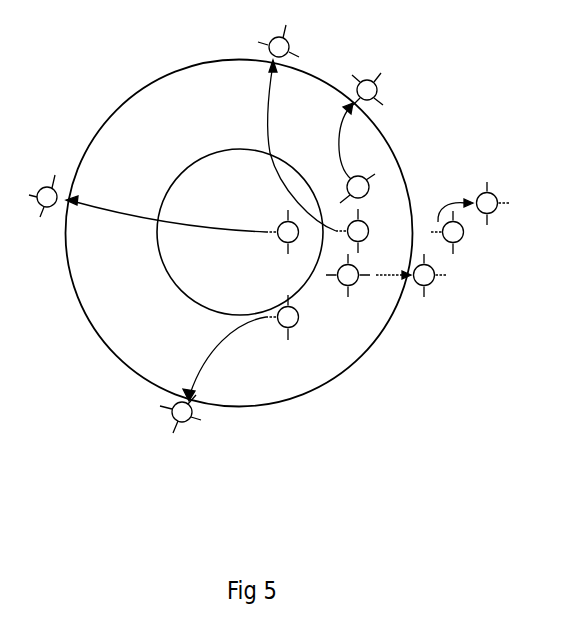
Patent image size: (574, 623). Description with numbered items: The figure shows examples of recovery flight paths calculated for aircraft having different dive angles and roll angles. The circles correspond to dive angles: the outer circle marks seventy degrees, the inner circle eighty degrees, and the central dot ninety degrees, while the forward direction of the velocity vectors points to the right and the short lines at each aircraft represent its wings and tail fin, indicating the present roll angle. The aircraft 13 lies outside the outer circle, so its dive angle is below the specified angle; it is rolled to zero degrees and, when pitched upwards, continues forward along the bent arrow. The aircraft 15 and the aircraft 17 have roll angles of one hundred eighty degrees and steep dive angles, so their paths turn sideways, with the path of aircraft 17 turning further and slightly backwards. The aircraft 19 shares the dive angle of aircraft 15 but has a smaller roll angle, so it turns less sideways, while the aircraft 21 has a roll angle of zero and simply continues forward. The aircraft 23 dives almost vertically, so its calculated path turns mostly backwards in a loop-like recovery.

The aircraft 13 is at (462, 238).
The aircraft 15 is at (368, 225).
The aircraft 17 is at (280, 329).
The aircraft 19 is at (407, 188).
The aircraft 21 is at (358, 280).
The aircraft 23 is at (294, 239).